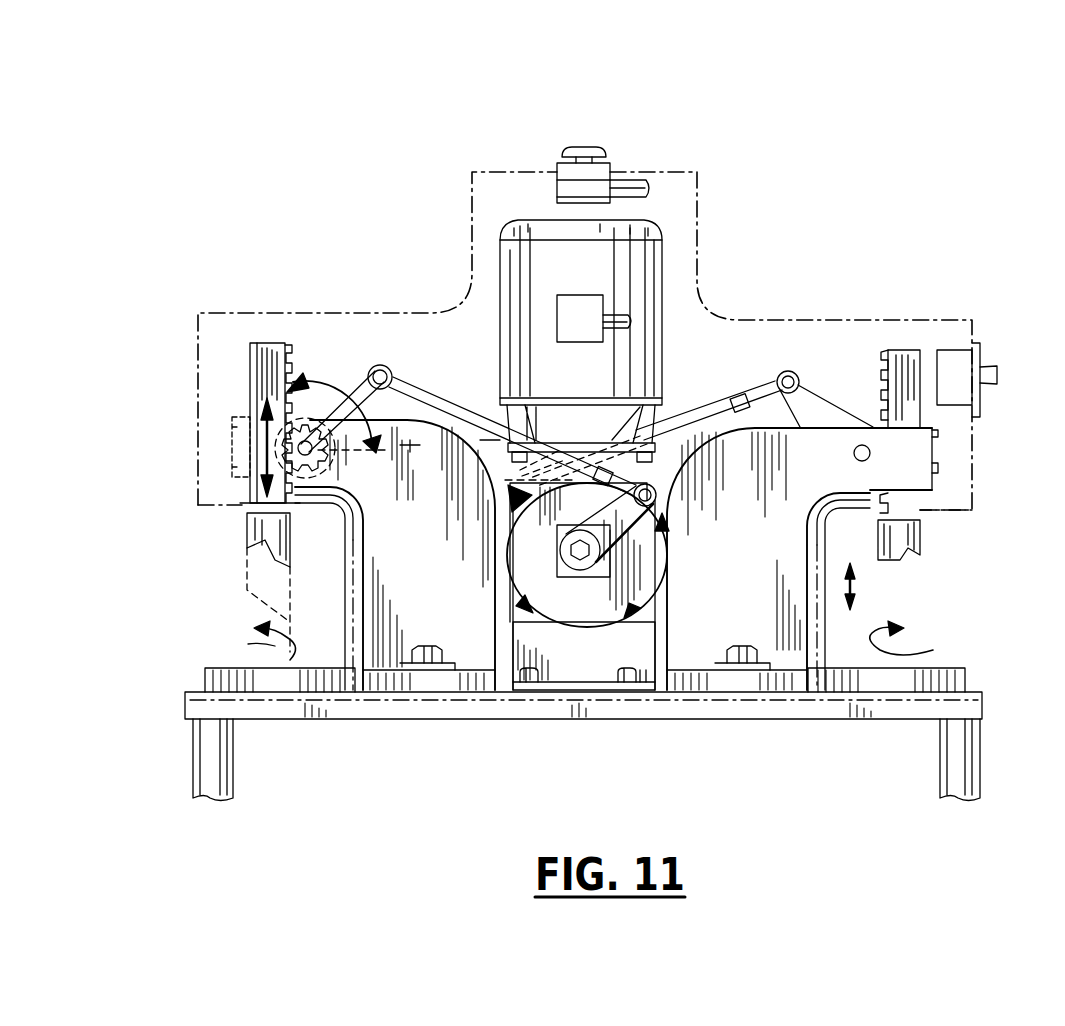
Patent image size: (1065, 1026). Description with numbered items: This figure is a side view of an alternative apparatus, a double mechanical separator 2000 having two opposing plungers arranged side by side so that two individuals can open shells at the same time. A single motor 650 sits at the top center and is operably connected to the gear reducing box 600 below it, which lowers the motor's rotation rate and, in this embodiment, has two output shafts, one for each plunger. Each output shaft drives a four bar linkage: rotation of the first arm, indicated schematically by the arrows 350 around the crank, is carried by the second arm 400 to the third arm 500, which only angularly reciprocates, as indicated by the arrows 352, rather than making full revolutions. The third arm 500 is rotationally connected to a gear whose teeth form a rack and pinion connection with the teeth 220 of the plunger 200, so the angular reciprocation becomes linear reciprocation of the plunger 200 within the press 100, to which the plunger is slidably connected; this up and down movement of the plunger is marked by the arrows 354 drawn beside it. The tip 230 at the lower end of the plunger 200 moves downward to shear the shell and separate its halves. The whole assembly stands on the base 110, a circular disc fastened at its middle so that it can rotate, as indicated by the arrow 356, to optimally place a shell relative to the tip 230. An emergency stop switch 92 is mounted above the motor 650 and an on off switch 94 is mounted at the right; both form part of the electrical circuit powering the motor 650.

The double mechanical separator 2000 is at (866, 67).
The emergency stop switch 92 is at (588, 183).
The motor 650 is at (648, 273).
The plunger 200 is at (258, 382).
The teeth 220 is at (298, 364).
The arrows 352 is at (318, 424).
The third arm 500 is at (340, 385).
The second arm 400 is at (502, 418).
The on off switch 94 is at (982, 390).
The press 100 is at (404, 555).
The gear reducing box 600 is at (617, 666).
The arrows 350 is at (667, 578).
The vertical motion arrow 354 is at (206, 447).
The tip 230 is at (208, 582).
The base 110 is at (212, 668).
The arrow 356 is at (282, 711).